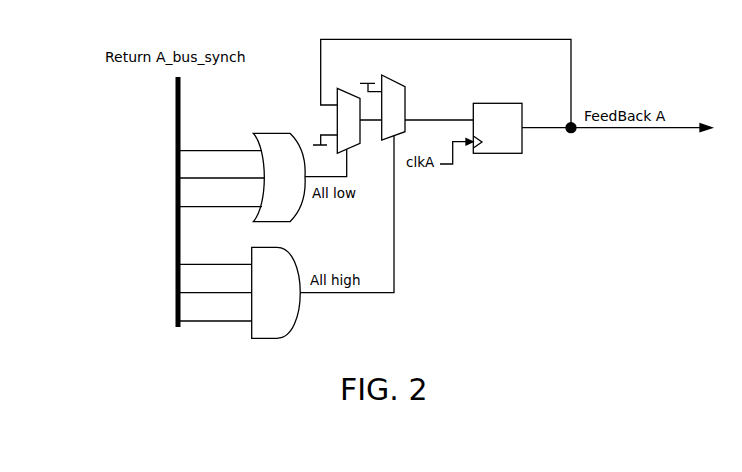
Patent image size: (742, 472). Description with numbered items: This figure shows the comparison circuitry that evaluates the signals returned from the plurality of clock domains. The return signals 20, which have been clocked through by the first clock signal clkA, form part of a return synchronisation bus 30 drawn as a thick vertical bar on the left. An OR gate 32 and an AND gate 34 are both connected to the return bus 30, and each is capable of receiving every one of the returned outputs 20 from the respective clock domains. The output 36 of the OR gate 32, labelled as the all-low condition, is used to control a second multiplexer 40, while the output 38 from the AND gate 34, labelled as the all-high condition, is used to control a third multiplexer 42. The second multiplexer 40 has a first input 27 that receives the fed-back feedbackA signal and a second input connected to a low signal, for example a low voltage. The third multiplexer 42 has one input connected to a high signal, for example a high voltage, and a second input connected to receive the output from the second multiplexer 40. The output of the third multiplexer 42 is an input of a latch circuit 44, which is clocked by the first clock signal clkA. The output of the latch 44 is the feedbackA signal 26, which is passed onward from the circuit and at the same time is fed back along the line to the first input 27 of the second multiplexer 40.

The return signals 20 is at (222, 225).
The feedbackA signal 26 is at (691, 127).
The first input of the second multiplexer 27 is at (516, 39).
The return synchronisation bus 30 is at (175, 113).
The OR gate 32 is at (276, 133).
The AND gate 34 is at (272, 338).
The output of the OR gate 36 is at (347, 153).
The output of the AND gate 38 is at (395, 271).
The second multiplexer 40 is at (340, 88).
The third multiplexer 42 is at (394, 75).
The latch circuit 44 is at (503, 154).